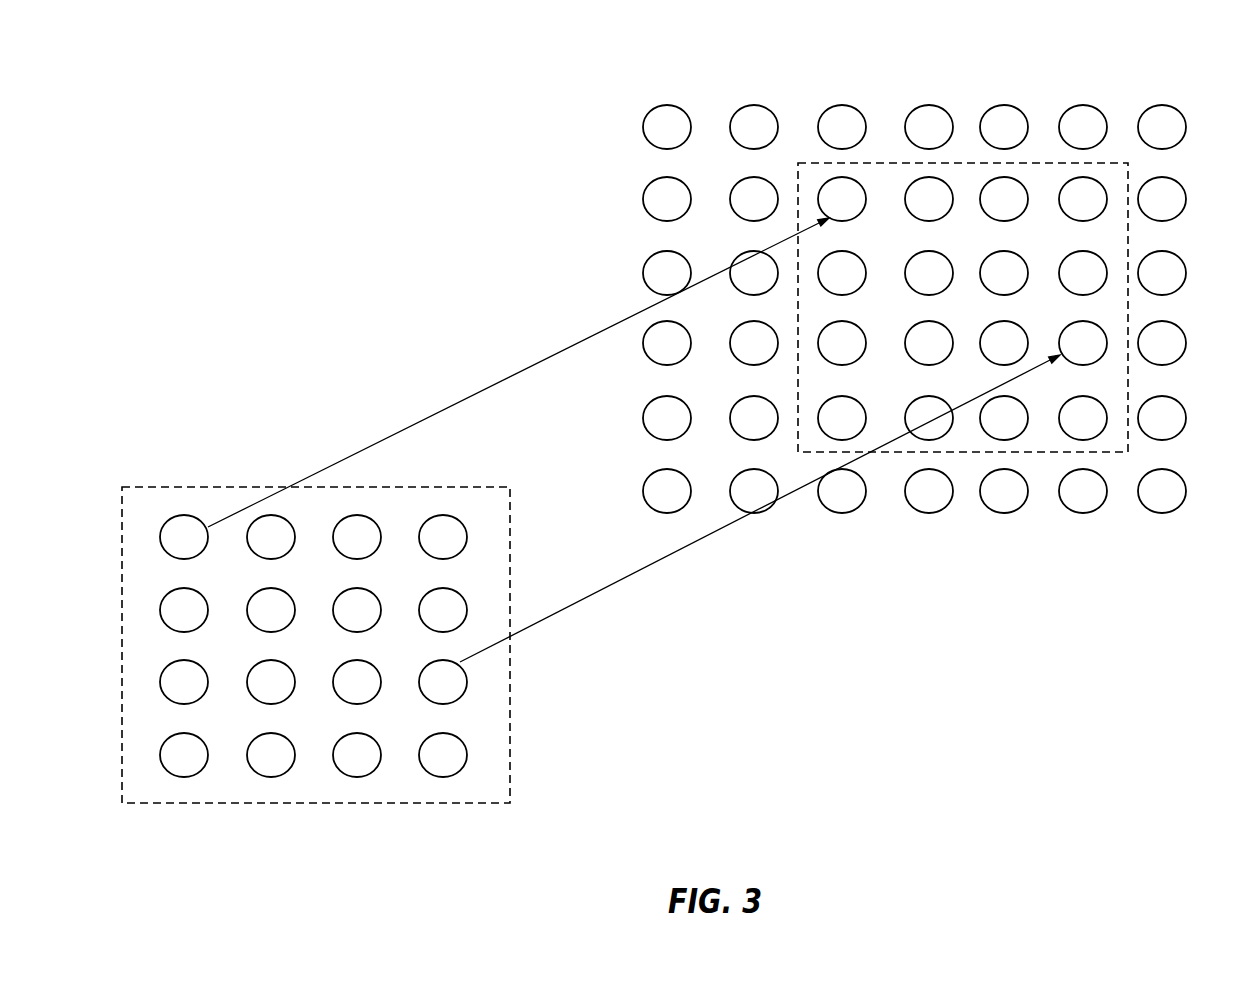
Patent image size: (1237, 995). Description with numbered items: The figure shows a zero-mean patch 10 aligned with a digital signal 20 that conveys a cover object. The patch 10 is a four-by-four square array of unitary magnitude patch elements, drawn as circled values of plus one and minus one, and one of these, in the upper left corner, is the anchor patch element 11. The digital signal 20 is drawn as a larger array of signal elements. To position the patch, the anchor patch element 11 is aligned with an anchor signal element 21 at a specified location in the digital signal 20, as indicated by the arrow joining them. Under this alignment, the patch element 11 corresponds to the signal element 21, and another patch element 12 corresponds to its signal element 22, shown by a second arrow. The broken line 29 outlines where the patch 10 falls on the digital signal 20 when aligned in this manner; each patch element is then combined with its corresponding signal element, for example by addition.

The patch 10 is at (308, 588).
The anchor patch element 11 is at (160, 526).
The patch element 12 is at (468, 682).
The digital signal 20 is at (932, 298).
The anchor signal element 21 is at (858, 185).
The signal element 22 is at (1095, 325).
The broken line 29 is at (1100, 452).